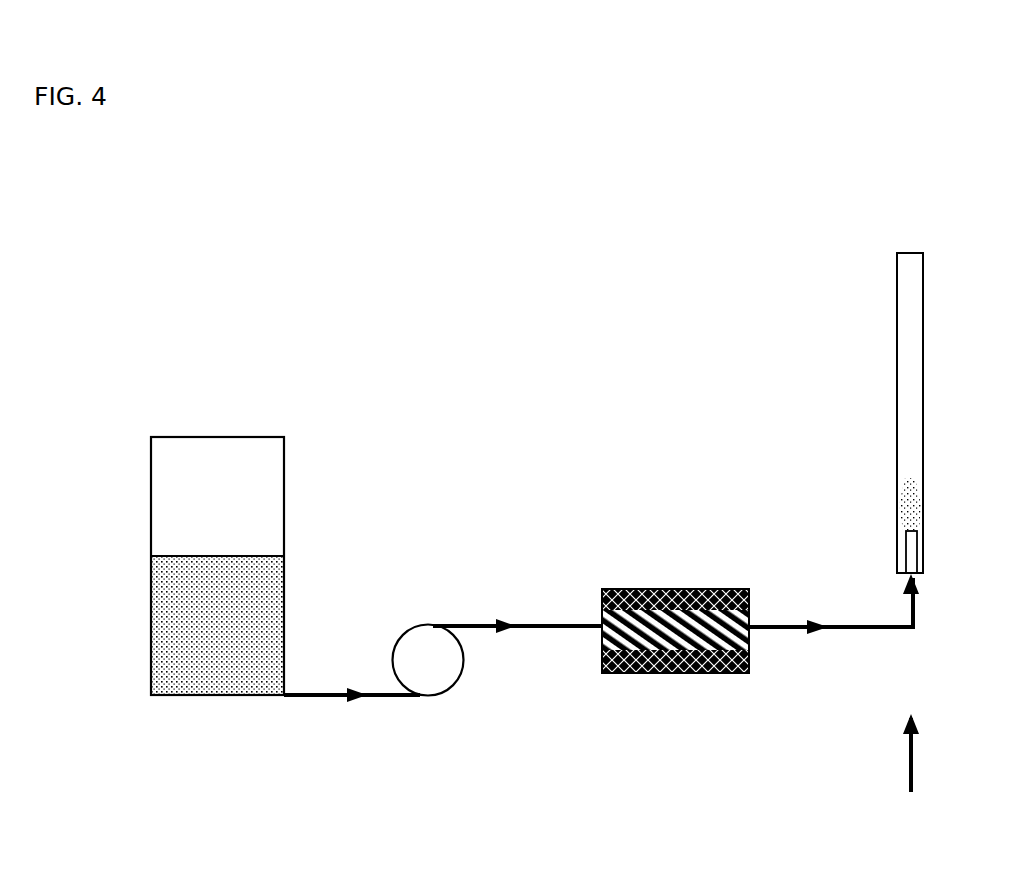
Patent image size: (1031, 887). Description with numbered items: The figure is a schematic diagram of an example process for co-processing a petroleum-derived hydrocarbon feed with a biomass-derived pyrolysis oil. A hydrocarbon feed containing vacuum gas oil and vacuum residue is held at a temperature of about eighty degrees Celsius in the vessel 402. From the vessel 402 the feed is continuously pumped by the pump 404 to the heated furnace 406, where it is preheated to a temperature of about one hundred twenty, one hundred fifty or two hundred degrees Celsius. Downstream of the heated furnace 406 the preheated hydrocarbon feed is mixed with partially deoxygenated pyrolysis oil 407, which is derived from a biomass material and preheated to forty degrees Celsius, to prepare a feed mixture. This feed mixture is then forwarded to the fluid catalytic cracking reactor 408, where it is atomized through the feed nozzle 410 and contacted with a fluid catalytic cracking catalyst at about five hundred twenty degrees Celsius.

The vessel 402 is at (284, 486).
The pump 404 is at (461, 680).
The heated furnace 406 is at (749, 593).
The partially deoxygenated pyrolysis oil 407 is at (913, 765).
The fluid catalytic cracking reactor 408 is at (925, 363).
The feed nozzle 410 is at (914, 545).